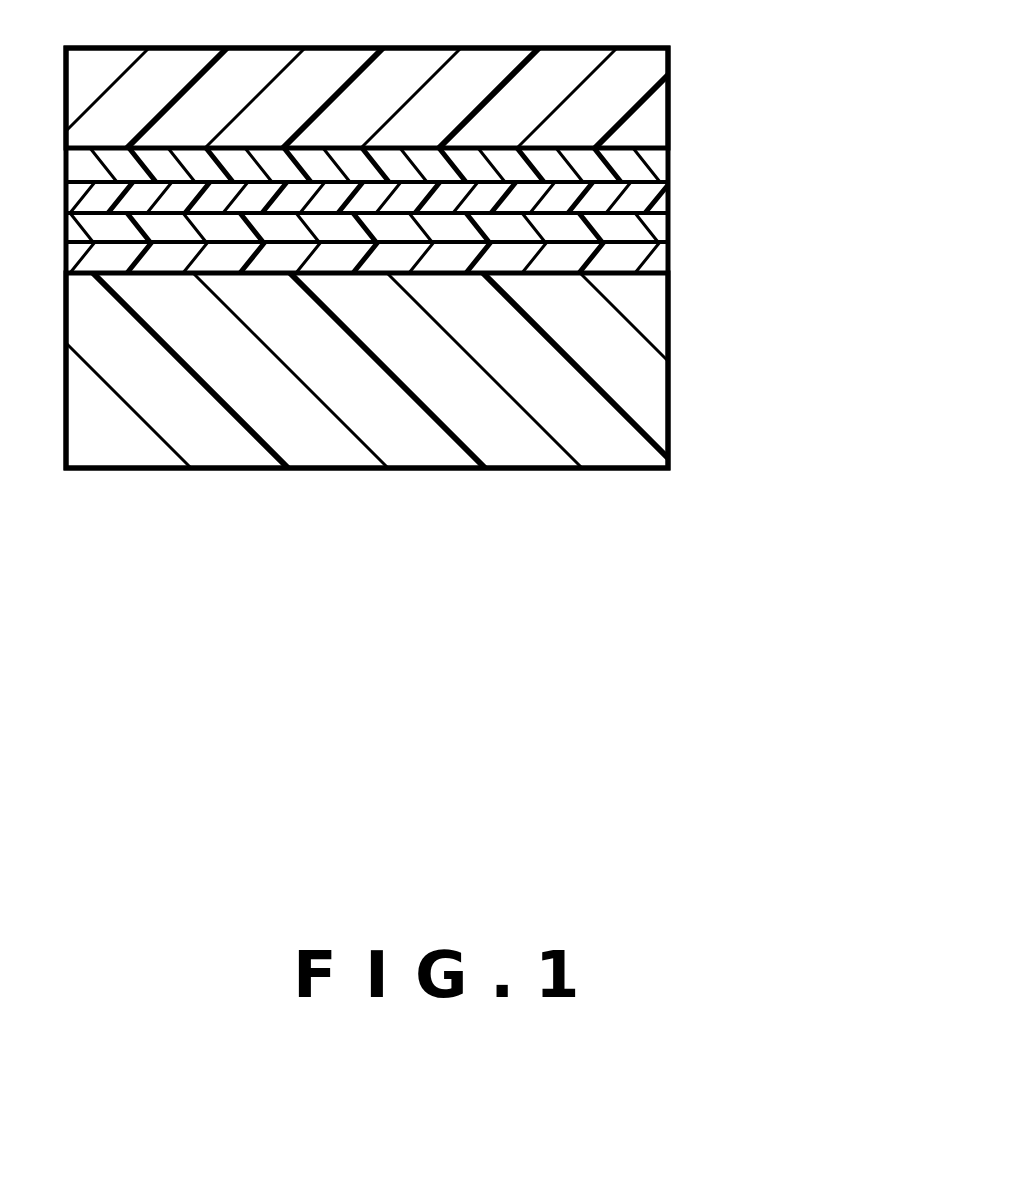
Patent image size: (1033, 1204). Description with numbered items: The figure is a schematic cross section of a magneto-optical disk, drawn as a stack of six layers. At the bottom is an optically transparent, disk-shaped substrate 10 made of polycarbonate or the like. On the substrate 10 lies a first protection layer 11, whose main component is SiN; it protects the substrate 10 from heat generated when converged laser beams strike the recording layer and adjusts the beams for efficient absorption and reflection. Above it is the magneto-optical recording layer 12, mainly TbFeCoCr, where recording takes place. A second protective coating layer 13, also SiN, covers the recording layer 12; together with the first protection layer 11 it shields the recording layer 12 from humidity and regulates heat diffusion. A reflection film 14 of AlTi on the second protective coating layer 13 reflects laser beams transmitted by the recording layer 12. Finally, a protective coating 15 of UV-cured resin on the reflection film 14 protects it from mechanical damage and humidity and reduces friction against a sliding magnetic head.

The substrate 10 is at (647, 373).
The first protection layer 11 is at (650, 260).
The magneto-optical recording layer 12 is at (650, 230).
The second protective coating layer 13 is at (650, 200).
The reflection film 14 is at (650, 163).
The protective coating 15 is at (648, 108).